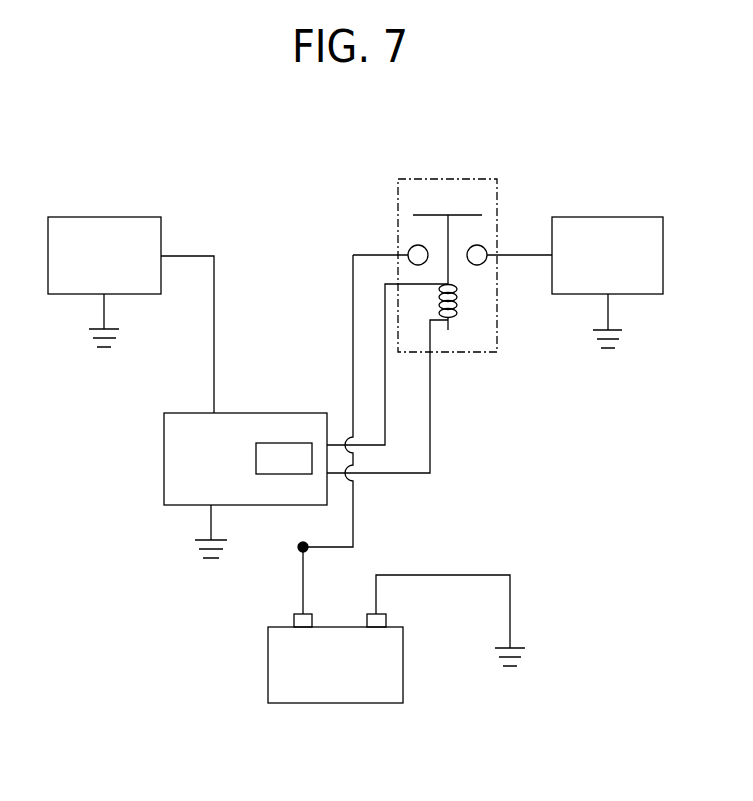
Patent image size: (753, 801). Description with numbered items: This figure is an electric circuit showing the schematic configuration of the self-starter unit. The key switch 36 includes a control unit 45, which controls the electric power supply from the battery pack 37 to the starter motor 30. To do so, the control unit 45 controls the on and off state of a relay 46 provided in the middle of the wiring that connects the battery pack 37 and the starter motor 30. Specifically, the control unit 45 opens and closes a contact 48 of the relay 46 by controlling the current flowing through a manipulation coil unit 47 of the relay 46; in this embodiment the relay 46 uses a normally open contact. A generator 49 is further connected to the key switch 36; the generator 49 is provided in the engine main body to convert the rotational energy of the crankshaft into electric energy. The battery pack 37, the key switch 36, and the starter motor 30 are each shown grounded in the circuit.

The generator 49 is at (107, 217).
The key switch 36 is at (164, 462).
The control unit 45 is at (283, 443).
The relay 46 is at (447, 234).
The contact 48 is at (465, 214).
The manipulation coil unit 47 is at (452, 313).
The starter motor 30 is at (608, 217).
The battery pack 37 is at (337, 705).